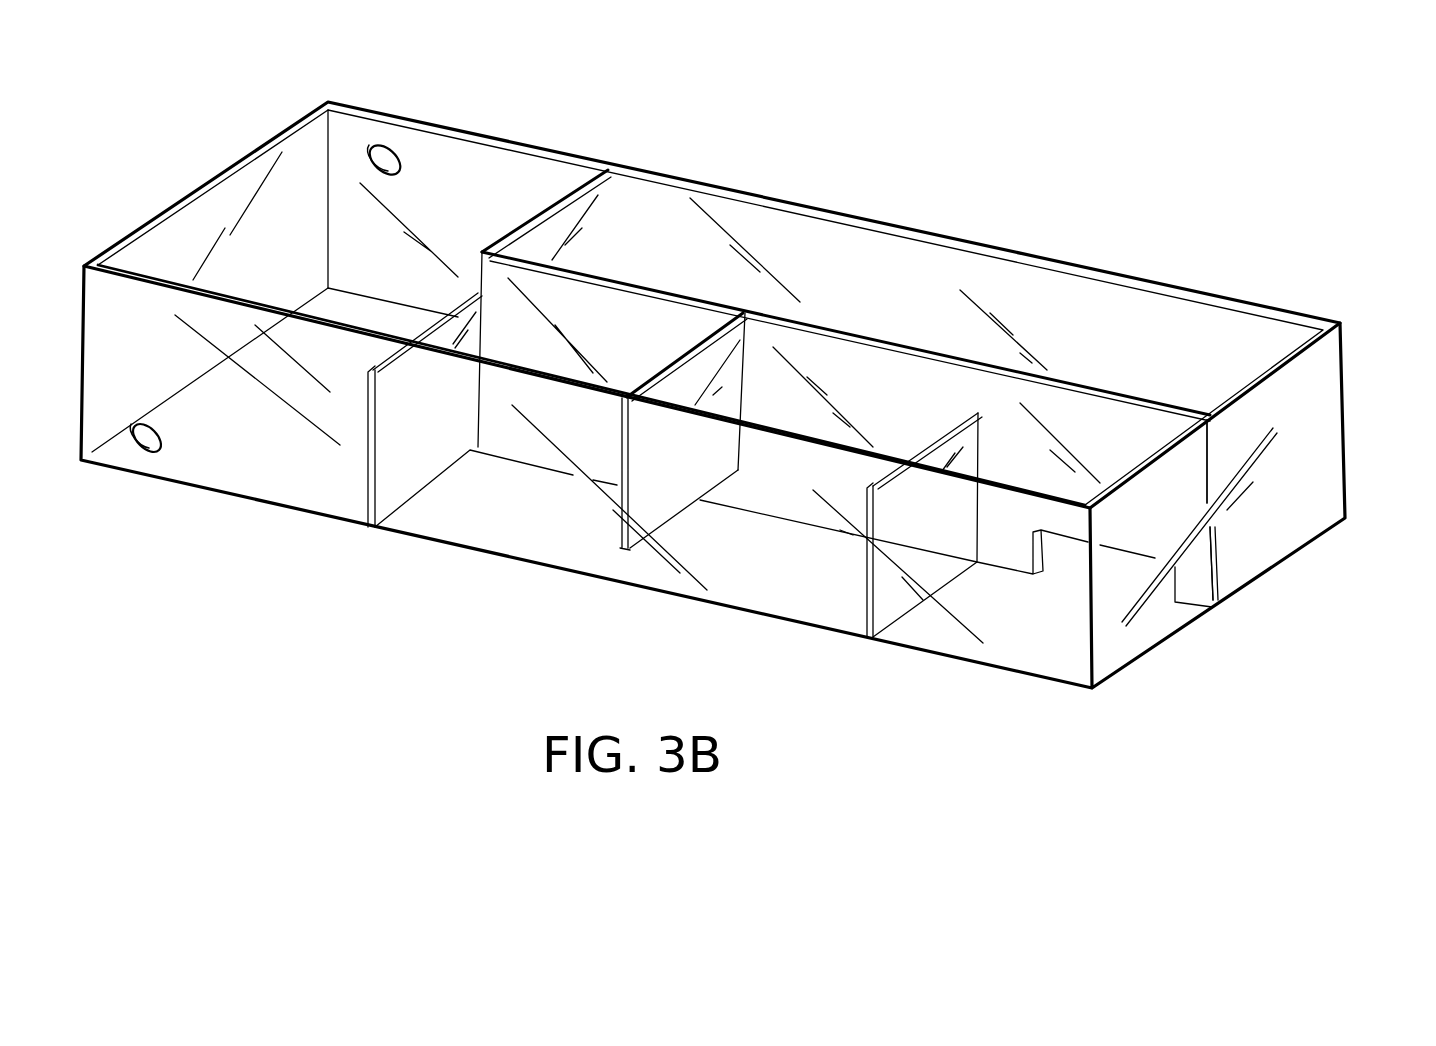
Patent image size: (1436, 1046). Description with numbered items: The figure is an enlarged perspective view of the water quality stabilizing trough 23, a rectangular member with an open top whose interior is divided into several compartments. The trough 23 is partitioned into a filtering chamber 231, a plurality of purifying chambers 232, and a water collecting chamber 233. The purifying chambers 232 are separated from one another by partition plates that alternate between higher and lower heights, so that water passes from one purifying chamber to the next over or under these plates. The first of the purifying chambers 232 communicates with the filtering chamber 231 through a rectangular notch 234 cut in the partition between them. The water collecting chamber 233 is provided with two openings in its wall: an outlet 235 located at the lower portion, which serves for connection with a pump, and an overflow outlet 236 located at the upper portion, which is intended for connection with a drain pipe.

The water quality stabilizing trough 23 is at (1353, 415).
The filtering chamber 231 is at (1000, 277).
The purifying chambers 232 is at (566, 368).
The water collecting chamber 233 is at (450, 215).
The rectangular notch 234 is at (1160, 588).
The outlet 235 is at (147, 448).
The overflow outlet 236 is at (388, 156).